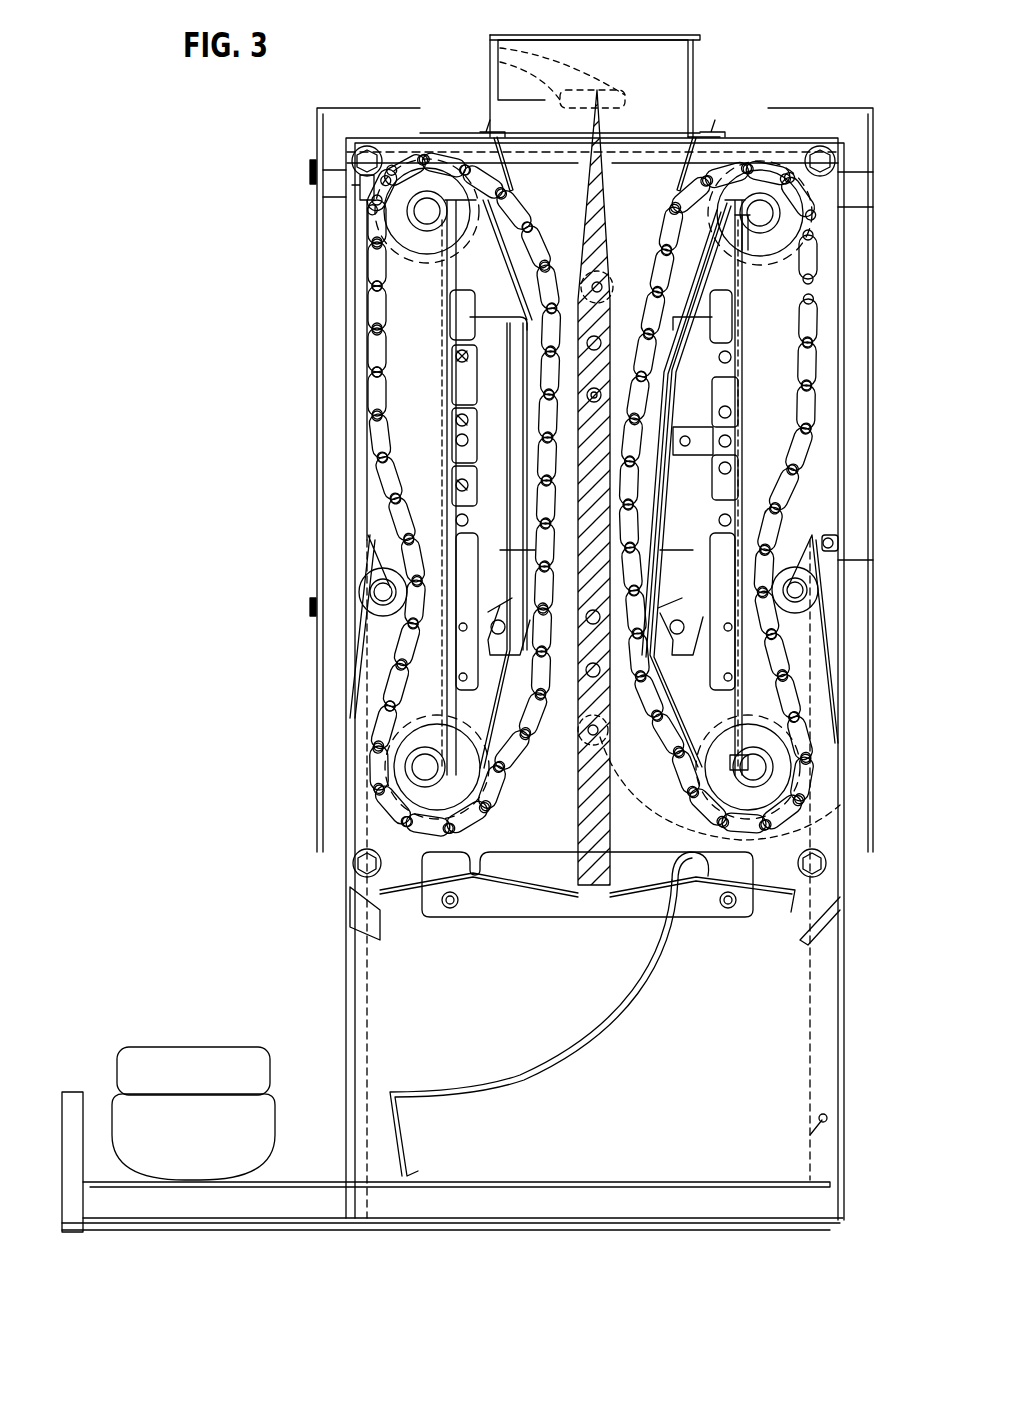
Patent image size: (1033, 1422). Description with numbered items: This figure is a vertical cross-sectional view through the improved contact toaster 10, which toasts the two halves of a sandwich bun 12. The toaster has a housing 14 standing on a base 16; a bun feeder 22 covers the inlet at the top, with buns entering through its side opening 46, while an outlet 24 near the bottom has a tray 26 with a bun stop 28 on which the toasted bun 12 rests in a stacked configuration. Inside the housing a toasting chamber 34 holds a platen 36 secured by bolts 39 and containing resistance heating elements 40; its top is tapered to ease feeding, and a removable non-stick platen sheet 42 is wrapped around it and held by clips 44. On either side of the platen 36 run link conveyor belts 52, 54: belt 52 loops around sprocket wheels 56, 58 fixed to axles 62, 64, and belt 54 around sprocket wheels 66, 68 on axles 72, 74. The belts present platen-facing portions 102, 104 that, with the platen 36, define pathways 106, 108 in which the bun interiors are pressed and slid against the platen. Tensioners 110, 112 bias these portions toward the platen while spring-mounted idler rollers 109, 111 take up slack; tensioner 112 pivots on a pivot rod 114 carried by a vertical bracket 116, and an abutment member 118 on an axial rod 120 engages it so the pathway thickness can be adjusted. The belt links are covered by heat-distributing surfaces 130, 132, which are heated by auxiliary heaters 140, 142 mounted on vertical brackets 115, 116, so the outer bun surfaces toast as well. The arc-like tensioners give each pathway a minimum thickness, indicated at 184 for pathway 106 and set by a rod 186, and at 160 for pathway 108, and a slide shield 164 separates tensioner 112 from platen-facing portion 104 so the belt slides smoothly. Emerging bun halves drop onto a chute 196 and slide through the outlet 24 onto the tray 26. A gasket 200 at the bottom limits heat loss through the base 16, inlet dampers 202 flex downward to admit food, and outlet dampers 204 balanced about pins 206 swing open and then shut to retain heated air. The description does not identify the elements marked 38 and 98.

The contact toaster 10 is at (266, 129).
The sandwich bun 12 is at (184, 1107).
The housing 14 is at (842, 375).
The base 16 is at (452, 1233).
The bun feeder 22 is at (690, 36).
The outlet 24 is at (340, 945).
The tray 26 is at (287, 1180).
The bun stop 28 is at (62, 1100).
The toasting chamber 34 is at (415, 225).
The platen 36 is at (587, 190).
The right guide bracket 38 is at (637, 915).
The bolts 39 is at (612, 285).
The resistance heating elements 40 is at (475, 695).
The platen sheet 42 is at (460, 790).
The clips 44 is at (490, 45).
The side opening 46 is at (690, 68).
The link conveyor belt 52 is at (443, 493).
The link conveyor belt 54 is at (740, 520).
The sprocket wheel 56 is at (395, 196).
The sprocket wheel 58 is at (353, 862).
The axle 62 is at (427, 195).
The axle 64 is at (405, 758).
The sprocket wheel 66 is at (790, 212).
The sprocket wheel 68 is at (792, 787).
The axle 72 is at (777, 200).
The axle 74 is at (765, 745).
The upper base rail 98 is at (157, 1190).
The platen-facing portion 102 is at (540, 432).
The platen-facing portion 104 is at (640, 420).
The pathway 106 is at (568, 453).
The pathway 108 is at (622, 393).
The spring mounted idler roller 109 is at (360, 602).
The tensioner 110 is at (455, 300).
The spring mounted idler roller 111 is at (830, 573).
The tensioner 112 is at (670, 700).
The pivot rod 114 is at (840, 543).
The vertical bracket 115 is at (450, 665).
The vertical bracket 116 is at (762, 703).
The abutment member 118 is at (690, 620).
The axial rod 120 is at (770, 595).
The heat-distributing surface 130 is at (440, 262).
The heat-distributing surface 132 is at (817, 340).
The auxiliary heater 140 is at (360, 580).
The auxiliary heater 142 is at (735, 352).
The point of minimum thickness 160 is at (700, 458).
The slide shield 164 is at (728, 212).
The minimum thickness 184 is at (568, 375).
The rod 186 is at (535, 392).
The chute 196 is at (643, 990).
The gasket 200 is at (175, 1232).
The inlet dampers 202 is at (657, 133).
The outlet dampers 204 is at (866, 858).
The pins 206 is at (815, 893).